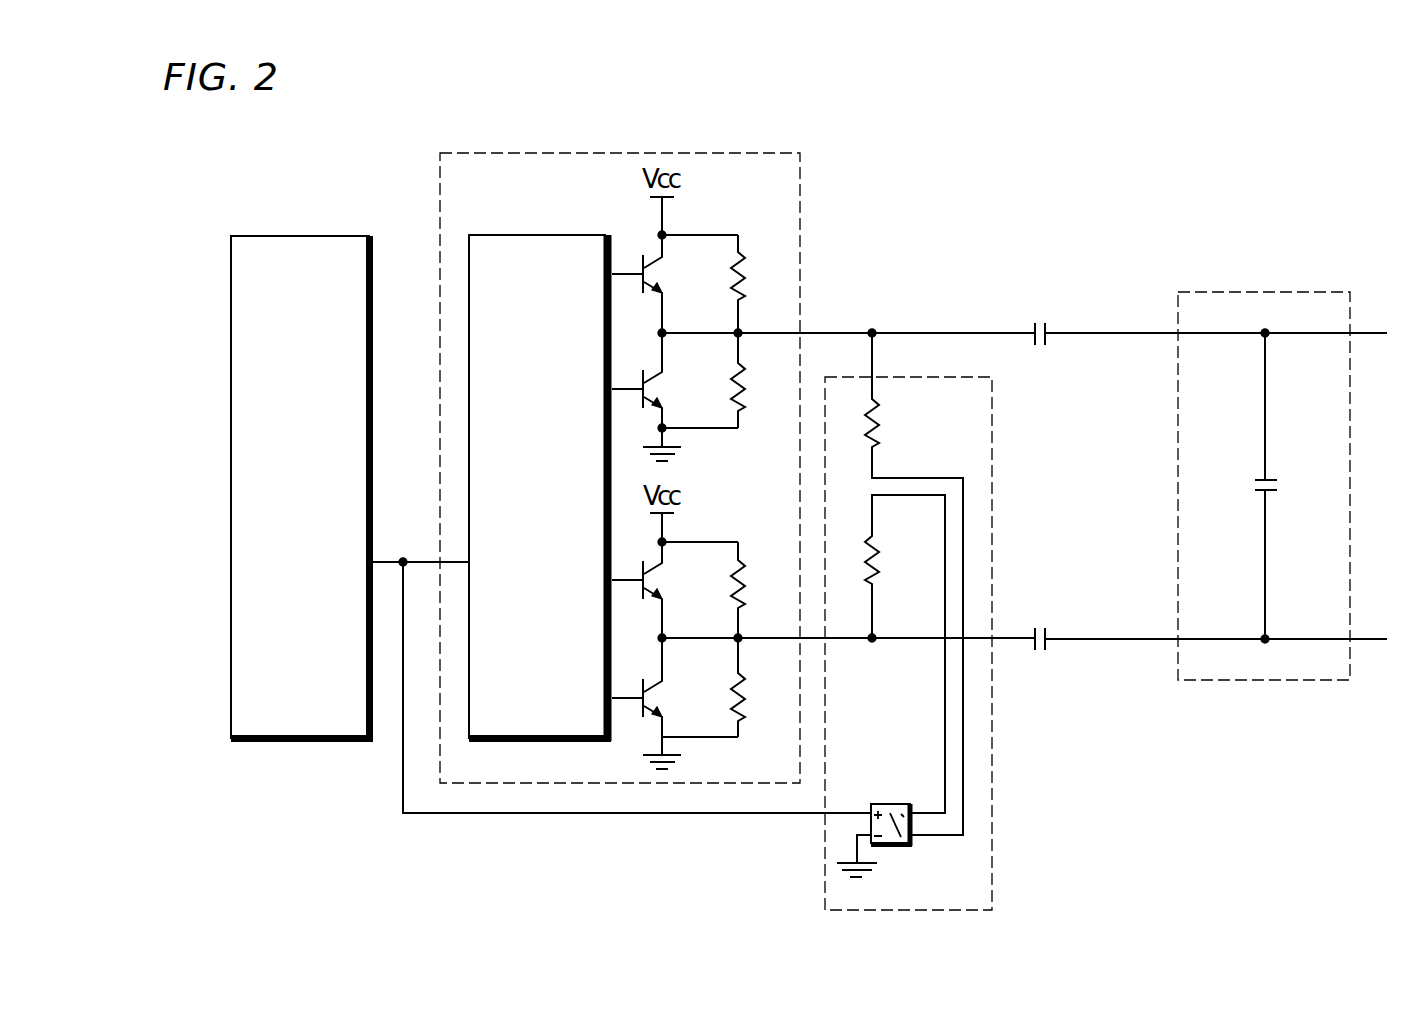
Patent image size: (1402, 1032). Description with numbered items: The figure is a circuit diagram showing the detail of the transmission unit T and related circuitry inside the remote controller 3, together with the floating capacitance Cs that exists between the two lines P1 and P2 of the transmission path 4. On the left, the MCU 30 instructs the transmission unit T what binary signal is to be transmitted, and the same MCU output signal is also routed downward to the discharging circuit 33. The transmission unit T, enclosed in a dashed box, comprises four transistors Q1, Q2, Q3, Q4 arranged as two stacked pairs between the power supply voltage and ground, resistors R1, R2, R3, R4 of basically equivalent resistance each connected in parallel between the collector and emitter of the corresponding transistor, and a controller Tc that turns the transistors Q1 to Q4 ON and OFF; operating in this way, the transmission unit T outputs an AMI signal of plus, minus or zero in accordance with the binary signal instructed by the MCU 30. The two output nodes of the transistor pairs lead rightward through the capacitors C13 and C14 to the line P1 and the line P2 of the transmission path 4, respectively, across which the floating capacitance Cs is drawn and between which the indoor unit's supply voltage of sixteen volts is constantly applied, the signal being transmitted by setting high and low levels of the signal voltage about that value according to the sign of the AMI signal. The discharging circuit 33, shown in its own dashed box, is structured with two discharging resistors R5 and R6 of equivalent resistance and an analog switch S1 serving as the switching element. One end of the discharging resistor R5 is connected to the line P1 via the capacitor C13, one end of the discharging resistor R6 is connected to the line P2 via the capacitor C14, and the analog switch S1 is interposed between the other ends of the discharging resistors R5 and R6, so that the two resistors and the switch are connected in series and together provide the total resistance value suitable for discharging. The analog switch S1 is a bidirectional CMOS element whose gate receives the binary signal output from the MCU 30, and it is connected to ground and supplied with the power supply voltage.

The MCU 30 is at (296, 232).
The remote controller 3 is at (398, 155).
The transmission unit T is at (800, 213).
The controller Tc is at (540, 235).
The transistor Q1 is at (652, 284).
The transistor Q2 is at (654, 380).
The transistor Q3 is at (653, 590).
The transistor Q4 is at (654, 687).
The resistor R1 is at (754, 284).
The resistor R2 is at (756, 380).
The resistor R3 is at (756, 590).
The resistor R4 is at (756, 687).
The discharging resistor R5 is at (914, 584).
The discharging resistor R6 is at (905, 654).
The analog switch S1 is at (890, 804).
The discharging circuit 33 is at (993, 747).
The capacitor C13 is at (1203, 315).
The capacitor C14 is at (1203, 620).
The transmission path 4 is at (1266, 292).
The line P1 is at (1205, 317).
The line P2 is at (1206, 624).
The floating capacitance Cs is at (1283, 486).